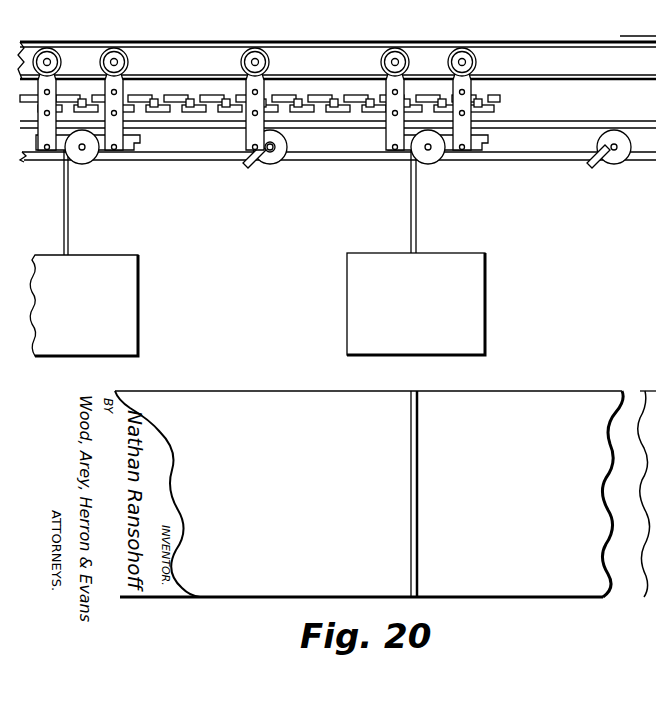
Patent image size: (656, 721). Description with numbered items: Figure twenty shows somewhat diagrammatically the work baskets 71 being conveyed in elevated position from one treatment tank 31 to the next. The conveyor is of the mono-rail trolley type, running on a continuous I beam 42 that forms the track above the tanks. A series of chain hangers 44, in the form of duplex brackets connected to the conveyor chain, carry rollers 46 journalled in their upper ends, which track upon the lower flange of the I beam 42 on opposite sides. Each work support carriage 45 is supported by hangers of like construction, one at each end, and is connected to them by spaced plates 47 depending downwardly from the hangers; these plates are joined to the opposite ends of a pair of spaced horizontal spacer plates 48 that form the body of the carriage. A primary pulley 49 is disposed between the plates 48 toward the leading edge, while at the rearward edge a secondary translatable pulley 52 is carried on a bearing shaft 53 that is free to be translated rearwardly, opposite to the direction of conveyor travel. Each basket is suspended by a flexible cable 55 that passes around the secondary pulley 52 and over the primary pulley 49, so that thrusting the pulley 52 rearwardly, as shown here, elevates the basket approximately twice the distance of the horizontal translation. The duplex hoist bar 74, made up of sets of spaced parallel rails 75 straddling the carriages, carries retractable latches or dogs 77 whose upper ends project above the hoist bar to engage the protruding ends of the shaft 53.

The chemical treatment tanks 31 is at (573, 383).
The I beam 42 is at (358, 42).
The chain hangers 44 is at (118, 76).
The work support carriages 45 is at (358, 114).
The rollers 46 is at (270, 45).
The spaced plates 47 is at (38, 132).
The spacer plates 48 is at (124, 146).
The primary pulley 49 is at (86, 162).
The secondary translatable pulley 52 is at (290, 126).
The bearing shaft 53 is at (286, 146).
The flexible cable 55 is at (232, 130).
The work baskets 71 is at (102, 255).
The hoist bar 74 is at (372, 161).
The rails 75 is at (332, 161).
The retractable latches or dogs 77 is at (248, 168).